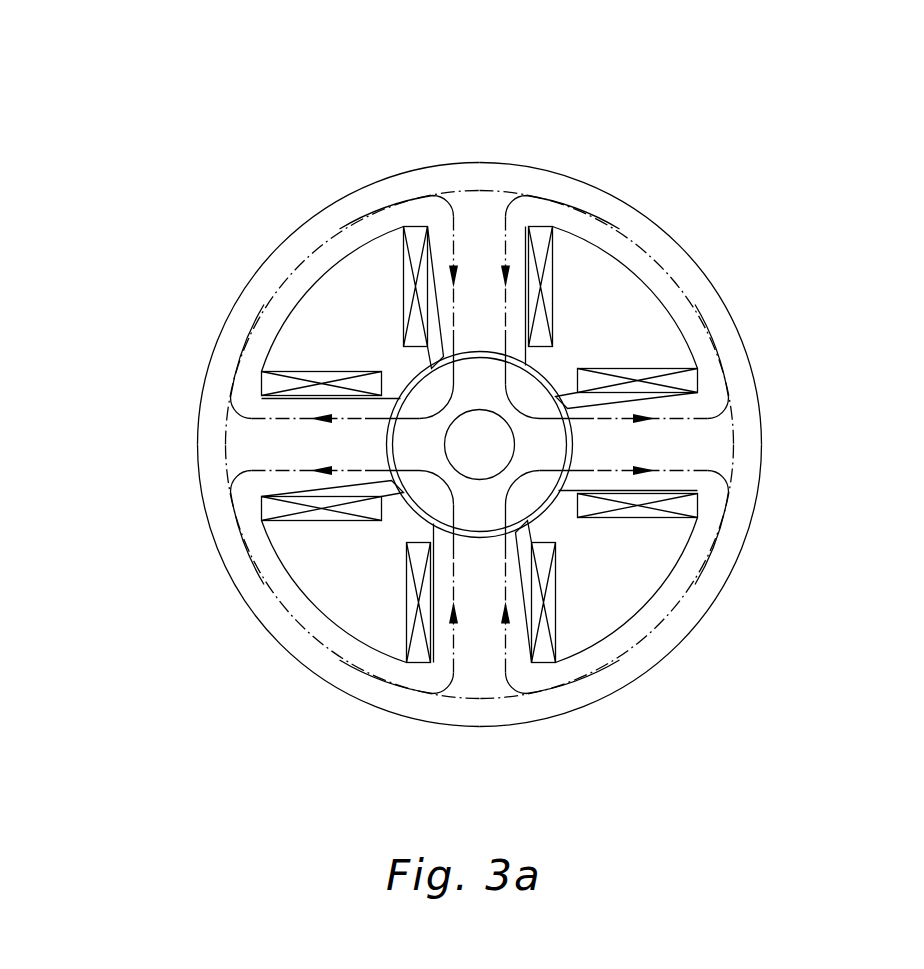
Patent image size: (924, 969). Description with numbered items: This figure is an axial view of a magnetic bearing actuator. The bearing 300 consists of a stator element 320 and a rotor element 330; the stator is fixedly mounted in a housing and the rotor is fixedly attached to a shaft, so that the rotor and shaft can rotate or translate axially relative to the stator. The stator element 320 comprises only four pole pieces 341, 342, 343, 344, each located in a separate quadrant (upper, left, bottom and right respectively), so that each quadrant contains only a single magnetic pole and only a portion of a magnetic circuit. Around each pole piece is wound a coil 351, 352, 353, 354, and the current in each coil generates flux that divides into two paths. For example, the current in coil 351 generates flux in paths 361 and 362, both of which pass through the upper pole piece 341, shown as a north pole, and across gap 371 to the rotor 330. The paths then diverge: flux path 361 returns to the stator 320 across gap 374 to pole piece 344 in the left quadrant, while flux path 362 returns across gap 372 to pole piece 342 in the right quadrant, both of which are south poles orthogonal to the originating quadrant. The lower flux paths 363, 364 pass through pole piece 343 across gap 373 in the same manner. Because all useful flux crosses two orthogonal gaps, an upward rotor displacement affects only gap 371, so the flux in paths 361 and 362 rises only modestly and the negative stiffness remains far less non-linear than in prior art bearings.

The bearing 300 is at (493, 421).
The stator element 320 is at (513, 416).
The rotor element 330 is at (538, 508).
The pole piece 341 is at (515, 257).
The pole piece 342 is at (687, 440).
The pole piece 343 is at (480, 653).
The pole piece 344 is at (287, 443).
The coil 351 is at (550, 298).
The coil 352 is at (657, 518).
The coil 353 is at (555, 617).
The coil 354 is at (300, 372).
The flux path 361 is at (313, 248).
The flux path 362 is at (687, 290).
The flux path 363 is at (687, 623).
The flux path 364 is at (300, 633).
The gap 371 is at (425, 240).
The gap 372 is at (560, 410).
The gap 373 is at (430, 637).
The gap 374 is at (397, 480).